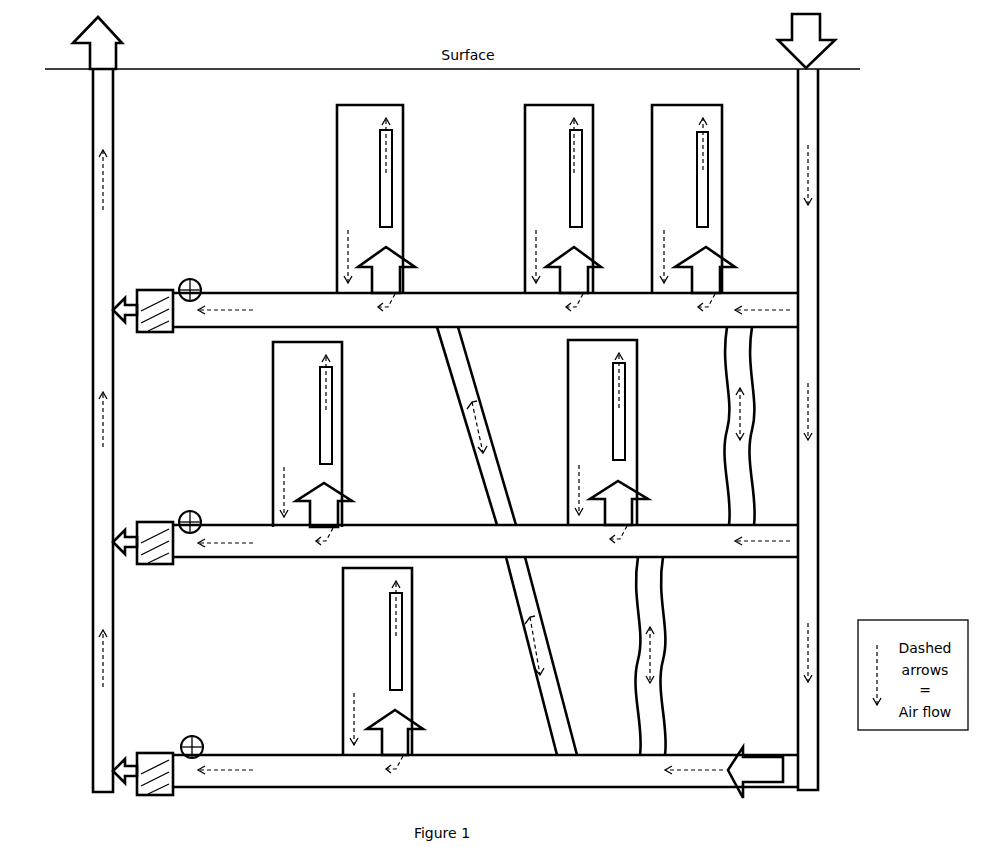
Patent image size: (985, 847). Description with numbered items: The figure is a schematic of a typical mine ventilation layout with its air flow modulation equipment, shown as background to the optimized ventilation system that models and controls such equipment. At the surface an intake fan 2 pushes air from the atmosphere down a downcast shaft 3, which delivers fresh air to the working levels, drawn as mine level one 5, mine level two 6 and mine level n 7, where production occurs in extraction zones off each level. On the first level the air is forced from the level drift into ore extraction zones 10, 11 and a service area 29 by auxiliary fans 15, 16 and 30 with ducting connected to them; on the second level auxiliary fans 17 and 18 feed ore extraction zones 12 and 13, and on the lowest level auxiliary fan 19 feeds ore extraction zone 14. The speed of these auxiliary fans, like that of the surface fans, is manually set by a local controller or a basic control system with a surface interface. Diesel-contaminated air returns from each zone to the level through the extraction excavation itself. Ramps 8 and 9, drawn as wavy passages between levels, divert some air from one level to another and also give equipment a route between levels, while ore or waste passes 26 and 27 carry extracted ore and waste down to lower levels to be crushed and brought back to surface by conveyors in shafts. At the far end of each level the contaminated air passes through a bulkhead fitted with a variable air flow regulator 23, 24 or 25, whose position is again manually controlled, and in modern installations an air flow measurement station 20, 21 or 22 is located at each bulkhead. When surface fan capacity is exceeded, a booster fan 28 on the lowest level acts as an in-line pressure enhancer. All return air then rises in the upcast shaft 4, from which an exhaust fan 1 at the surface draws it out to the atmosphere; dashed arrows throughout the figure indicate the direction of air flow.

The exhaust fan 1 is at (115, 43).
The intake fan 2 is at (819, 41).
The downcast shaft 3 is at (819, 429).
The upcast shaft 4 is at (117, 430).
The working level 5 is at (485, 323).
The working level 6 is at (485, 555).
The working level 7 is at (485, 784).
The ramp 8 is at (751, 426).
The ramp 9 is at (661, 656).
The ore extraction zone 10 is at (363, 196).
The ore extraction zone 11 is at (550, 195).
The ore extraction zone 12 is at (300, 432).
The ore extraction zone 13 is at (595, 431).
The ore extraction zone 14 is at (370, 660).
The auxiliary fan 15 is at (386, 269).
The auxiliary fan 16 is at (572, 269).
The auxiliary fan 17 is at (323, 501).
The auxiliary fan 18 is at (619, 501).
The auxiliary fan 19 is at (394, 730).
The air flow measurement station 20 is at (190, 274).
The air flow measurement station 21 is at (190, 506).
The air flow measurement station 22 is at (192, 731).
The air flow regulator 23 is at (143, 296).
The air flow regulator 24 is at (143, 528).
The air flow regulator 25 is at (143, 758).
The ore pass 26 is at (476, 426).
The ore pass 27 is at (541, 656).
The booster fan 28 is at (753, 757).
The service area 29 is at (679, 195).
The auxiliary fan 30 is at (703, 269).